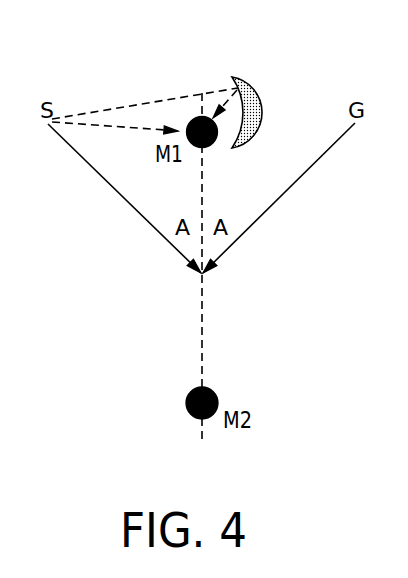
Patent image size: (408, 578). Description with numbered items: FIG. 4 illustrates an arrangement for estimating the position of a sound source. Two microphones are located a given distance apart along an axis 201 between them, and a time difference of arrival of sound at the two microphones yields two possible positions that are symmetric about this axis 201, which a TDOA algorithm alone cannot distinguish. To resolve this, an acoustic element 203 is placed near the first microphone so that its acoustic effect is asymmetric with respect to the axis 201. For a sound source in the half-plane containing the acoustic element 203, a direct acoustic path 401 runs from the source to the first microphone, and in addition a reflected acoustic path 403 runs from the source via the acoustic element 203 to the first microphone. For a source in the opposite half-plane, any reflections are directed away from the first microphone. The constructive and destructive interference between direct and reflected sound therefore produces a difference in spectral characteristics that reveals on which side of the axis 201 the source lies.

The axis 201 is at (203, 357).
The acoustic element 203 is at (260, 89).
The direct acoustic path 401 is at (163, 135).
The reflected acoustic path 403 is at (163, 102).